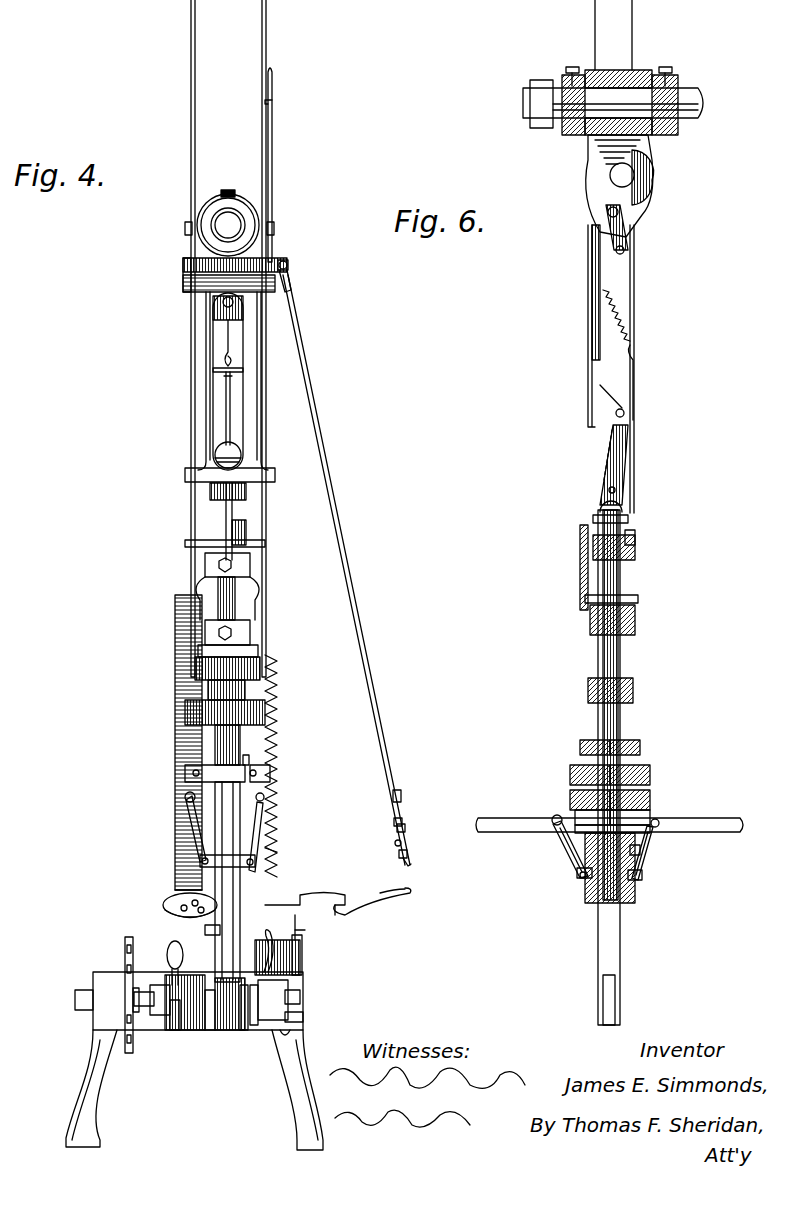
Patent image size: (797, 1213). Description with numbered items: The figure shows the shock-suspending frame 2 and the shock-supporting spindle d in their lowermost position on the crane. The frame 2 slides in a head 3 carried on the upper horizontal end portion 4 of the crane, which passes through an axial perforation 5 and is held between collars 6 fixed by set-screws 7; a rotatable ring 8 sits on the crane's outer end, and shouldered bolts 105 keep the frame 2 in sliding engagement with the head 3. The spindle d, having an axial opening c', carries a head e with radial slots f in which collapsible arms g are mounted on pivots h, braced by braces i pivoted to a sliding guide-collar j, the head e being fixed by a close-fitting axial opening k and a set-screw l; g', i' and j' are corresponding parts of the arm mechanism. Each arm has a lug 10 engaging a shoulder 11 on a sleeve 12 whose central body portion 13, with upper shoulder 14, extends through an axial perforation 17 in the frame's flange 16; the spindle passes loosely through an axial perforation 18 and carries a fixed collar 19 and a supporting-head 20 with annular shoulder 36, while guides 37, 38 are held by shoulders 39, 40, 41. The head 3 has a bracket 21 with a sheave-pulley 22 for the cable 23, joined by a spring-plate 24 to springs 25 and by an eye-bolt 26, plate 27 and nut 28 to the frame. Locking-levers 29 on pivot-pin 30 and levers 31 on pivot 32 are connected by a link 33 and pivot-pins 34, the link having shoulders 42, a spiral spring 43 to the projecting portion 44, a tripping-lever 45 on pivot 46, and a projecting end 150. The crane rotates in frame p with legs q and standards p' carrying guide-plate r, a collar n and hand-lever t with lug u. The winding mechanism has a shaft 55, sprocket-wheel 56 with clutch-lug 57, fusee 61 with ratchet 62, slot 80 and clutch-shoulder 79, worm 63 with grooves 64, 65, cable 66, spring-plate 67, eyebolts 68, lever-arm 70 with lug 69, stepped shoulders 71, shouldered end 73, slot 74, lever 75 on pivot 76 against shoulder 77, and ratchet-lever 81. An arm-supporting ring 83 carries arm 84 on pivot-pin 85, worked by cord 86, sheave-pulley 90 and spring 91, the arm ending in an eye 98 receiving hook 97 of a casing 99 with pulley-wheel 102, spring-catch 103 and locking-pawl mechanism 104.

In FIG. 4, the shock-suspending frame 2 is at (191, 26).
In FIG. 4, the head 3 is at (222, 196).
In FIG. 6, the head 3 is at (640, 70).
In FIG. 4, the upper horizontal end portion of the crane 4 is at (228, 225).
In FIG. 6, the upper horizontal end portion of the crane 4 is at (523, 103).
In FIG. 6, the axial perforation 5 is at (585, 66).
In FIG. 4, the collars 6 is at (204, 212).
In FIG. 6, the collars 6 is at (566, 134).
In FIG. 4, the set-screws 7 is at (232, 191).
In FIG. 6, the set-screws 7 is at (568, 68).
In FIG. 4, the rotatable ring or wheel 8 is at (245, 214).
In FIG. 6, the rotatable ring or wheel 8 is at (540, 82).
In FIG. 4, the upwardly-extending lug 10 is at (270, 770).
In FIG. 6, the upwardly-extending lug 10 is at (576, 818).
In FIG. 6, the annular flange or shoulder 11 is at (576, 806).
In FIG. 4, the sleeve 12 is at (178, 700).
In FIG. 6, the sleeve 12 is at (650, 795).
In FIG. 4, the central body portion 13 is at (246, 690).
In FIG. 6, the central body portion 13 is at (648, 770).
In FIG. 4, the upper annular shoulder 14 is at (258, 652).
In FIG. 6, the upper annular shoulder 14 is at (640, 745).
In FIG. 4, the inwardly-extending flange or rim 16 is at (195, 666).
In FIG. 6, the inwardly-extending flange or rim 16 is at (578, 768).
In FIG. 6, the axial perforation 17 is at (575, 795).
In FIG. 6, the axial perforation 18 is at (600, 740).
In FIG. 4, the fixed collar 19 is at (250, 632).
In FIG. 6, the fixed collar 19 is at (636, 690).
In FIG. 4, the supporting-head 20 is at (240, 450).
In FIG. 6, the supporting-head 20 is at (604, 506).
In FIG. 6, the downwardly-extending bracket 21 is at (590, 190).
In FIG. 4, the sheave-pulley 22 is at (214, 318).
In FIG. 6, the sheave-pulley 22 is at (652, 193).
In FIG. 4, the cable 23 is at (213, 300).
In FIG. 4, the spring-plate 24 is at (204, 586).
In FIG. 4, the springs 25 is at (182, 616).
In FIG. 4, the eye-bolt 26 is at (225, 362).
In FIG. 4, the plate 27 is at (212, 376).
In FIG. 4, the nut 28 is at (226, 385).
In FIG. 6, the locking-levers 29 is at (626, 236).
In FIG. 6, the pivot-pin 30 is at (608, 213).
In FIG. 4, the levers 31 is at (259, 420).
In FIG. 6, the levers 31 is at (626, 460).
In FIG. 6, the pivot 32 is at (616, 490).
In FIG. 4, the link 33 is at (245, 402).
In FIG. 6, the link 33 is at (594, 316).
In FIG. 6, the pivot-pins 34 is at (624, 252).
In FIG. 4, the annular shoulder 36 is at (215, 456).
In FIG. 6, the annular shoulder 36 is at (594, 518).
In FIG. 4, the guide 37 is at (185, 543).
In FIG. 6, the guide 37 is at (636, 600).
In FIG. 6, the guide 38 is at (636, 534).
In FIG. 4, the shoulder 39 is at (250, 565).
In FIG. 6, the shoulder 39 is at (636, 620).
In FIG. 4, the shoulder 40 is at (246, 532).
In FIG. 4, the shoulder 41 is at (210, 490).
In FIG. 6, the shoulder 41 is at (636, 546).
In FIG. 4, the shoulders 42 is at (183, 286).
In FIG. 6, the shoulders 42 is at (592, 236).
In FIG. 6, the spiral spring 43 is at (635, 320).
In FIG. 6, the projecting portion of the frame 44 is at (641, 345).
In FIG. 4, the tripping-lever 45 is at (273, 85).
In FIG. 6, the tripping-lever 45 is at (582, 570).
In FIG. 4, the pivot 46 is at (273, 103).
In FIG. 4, the shaft 55 is at (80, 992).
In FIG. 4, the sprocket-wheel 56 is at (125, 948).
In FIG. 4, the clutch-lug 57 is at (134, 999).
In FIG. 4, the conical winding-wheel or fusee 61 is at (200, 1034).
In FIG. 4, the ratchet portion 62 is at (190, 1030).
In FIG. 4, the worm 63 is at (242, 1032).
In FIG. 4, the spiral groove 64 is at (210, 1032).
In FIG. 4, the spiral groove 65 is at (230, 1031).
In FIG. 4, the cable 66 is at (205, 931).
In FIG. 4, the spring-plate 67 is at (175, 898).
In FIG. 4, the eyebolts 68 is at (176, 916).
In FIG. 4, the lug 69 is at (272, 990).
In FIG. 4, the lever-arm 70 is at (286, 968).
In FIG. 4, the stepped shoulders 71 is at (265, 962).
In FIG. 4, the shouldered end 73 is at (255, 1028).
In FIG. 4, the slot 74 is at (288, 1032).
In FIG. 4, the lever 75 is at (295, 952).
In FIG. 4, the pivot 76 is at (300, 1020).
In FIG. 4, the shoulder 77 is at (286, 1000).
In FIG. 4, the clutch-shoulder 79 is at (168, 985).
In FIG. 4, the slot 80 is at (150, 1020).
In FIG. 4, the ratchet-lever 81 is at (172, 946).
In FIG. 4, the arm-supporting ring 83 is at (185, 262).
In FIG. 4, the downwardly-extending arm 84 is at (348, 570).
In FIG. 4, the pivot-pin 85 is at (286, 260).
In FIG. 4, the cord 86 is at (183, 270).
In FIG. 4, the sheave-pulley 90 is at (290, 276).
In FIG. 4, the spiral spring 91 is at (265, 712).
In FIG. 4, the open hook 97 is at (394, 822).
In FIG. 4, the eye 98 is at (406, 828).
In FIG. 4, the casing 99 is at (410, 862).
In FIG. 4, the pulley-wheel 102 is at (402, 856).
In FIG. 4, the spring-catch 103 is at (402, 796).
In FIG. 4, the locking-pawl mechanism 104 is at (396, 844).
In FIG. 4, the shouldered bolts 105 is at (188, 226).
In FIG. 6, the projecting end of the link 150 is at (640, 180).
In FIG. 6, the axial opening c' is at (594, 1000).
In FIG. 4, the shock-supporting core or spindle d is at (227, 882).
In FIG. 6, the shock-supporting core or spindle d is at (610, 650).
In FIG. 4, the head e is at (185, 797).
In FIG. 6, the head e is at (576, 856).
In FIG. 4, the radial slots f is at (248, 760).
In FIG. 6, the radial slots f is at (640, 850).
In FIG. 4, the collapsible arms g is at (172, 874).
In FIG. 6, the collapsible arms g is at (609, 846).
In FIG. 4, the handle g' is at (284, 842).
In FIG. 4, the pivots h is at (256, 770).
In FIG. 6, the pivots h is at (660, 822).
In FIG. 4, the braces i is at (176, 829).
In FIG. 6, the braces i is at (556, 855).
In FIG. 4, the link i' is at (273, 837).
In FIG. 6, the link i' is at (654, 856).
In FIG. 4, the guide-collar j is at (201, 852).
In FIG. 6, the guide-collar j is at (575, 890).
In FIG. 4, the pivot j' is at (274, 860).
In FIG. 6, the pivot j' is at (640, 885).
In FIG. 6, the axial opening k is at (582, 880).
In FIG. 4, the set-screw l is at (264, 797).
In FIG. 6, the set-screw l is at (652, 860).
In FIG. 4, the collar n is at (302, 920).
In FIG. 4, the frame p is at (225, 1001).
In FIG. 4, the standards p' is at (313, 941).
In FIG. 4, the legs or standards q is at (93, 1078).
In FIG. 4, the slotted guide-plate r is at (302, 904).
In FIG. 4, the hand-lever t is at (392, 902).
In FIG. 4, the projecting lug portion u is at (338, 910).